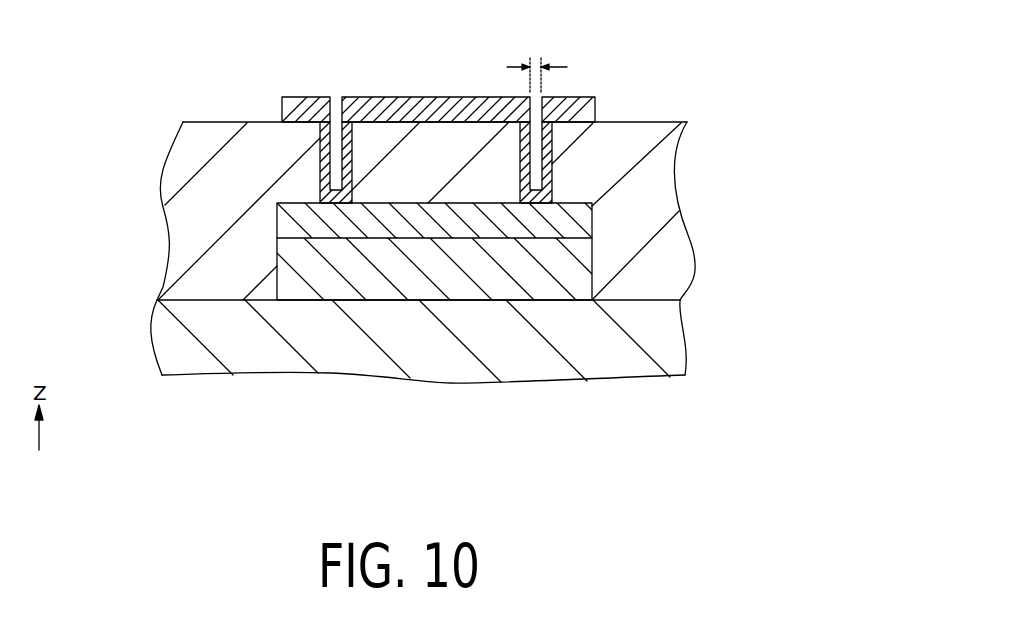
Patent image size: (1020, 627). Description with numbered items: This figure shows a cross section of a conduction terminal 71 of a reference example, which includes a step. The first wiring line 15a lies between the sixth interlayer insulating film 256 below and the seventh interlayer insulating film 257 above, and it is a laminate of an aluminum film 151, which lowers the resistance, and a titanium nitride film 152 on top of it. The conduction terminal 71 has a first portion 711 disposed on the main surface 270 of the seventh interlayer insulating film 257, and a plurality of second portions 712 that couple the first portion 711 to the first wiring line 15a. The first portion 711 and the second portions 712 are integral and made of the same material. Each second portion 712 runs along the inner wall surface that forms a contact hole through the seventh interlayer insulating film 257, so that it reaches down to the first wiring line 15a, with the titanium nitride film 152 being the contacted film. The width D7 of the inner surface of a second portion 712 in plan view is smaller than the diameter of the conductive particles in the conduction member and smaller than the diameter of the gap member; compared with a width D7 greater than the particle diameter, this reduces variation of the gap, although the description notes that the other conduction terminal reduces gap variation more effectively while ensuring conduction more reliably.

The seventh interlayer insulating film 257 is at (668, 253).
The sixth interlayer insulating film 256 is at (668, 328).
The first wiring line 15a is at (418, 337).
The aluminum film 151 is at (545, 272).
The titanium nitride film 152 is at (560, 220).
The conduction terminal 71 is at (434, 284).
The first portion 711 is at (297, 123).
The second portion 712 is at (346, 125).
The main surface 270 is at (228, 123).
The width D7 is at (537, 60).